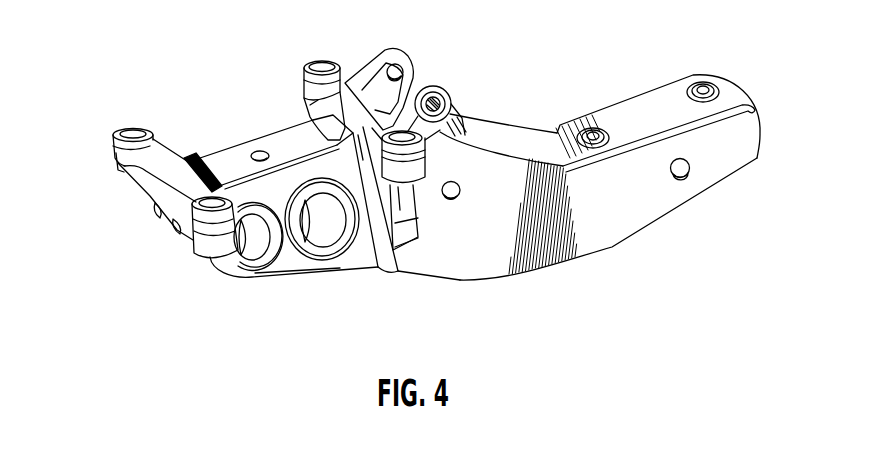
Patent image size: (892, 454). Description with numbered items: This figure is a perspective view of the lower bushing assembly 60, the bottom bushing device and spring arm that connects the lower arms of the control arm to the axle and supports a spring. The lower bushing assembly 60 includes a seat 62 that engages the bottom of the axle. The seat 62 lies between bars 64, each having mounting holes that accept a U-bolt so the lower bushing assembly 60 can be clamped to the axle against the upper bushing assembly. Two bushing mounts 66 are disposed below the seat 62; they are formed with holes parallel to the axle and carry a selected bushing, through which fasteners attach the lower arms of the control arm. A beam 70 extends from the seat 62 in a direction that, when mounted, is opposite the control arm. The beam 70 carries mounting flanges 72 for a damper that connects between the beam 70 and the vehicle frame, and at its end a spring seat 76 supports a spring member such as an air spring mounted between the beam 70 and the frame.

The lower bushing assembly 60 is at (225, 283).
The seat 62 is at (241, 110).
The bars 64 is at (337, 78).
The bushing mounts 66 is at (252, 278).
The beam 70 is at (610, 246).
The mounting flanges 72 is at (414, 74).
The spring seat 76 is at (640, 108).